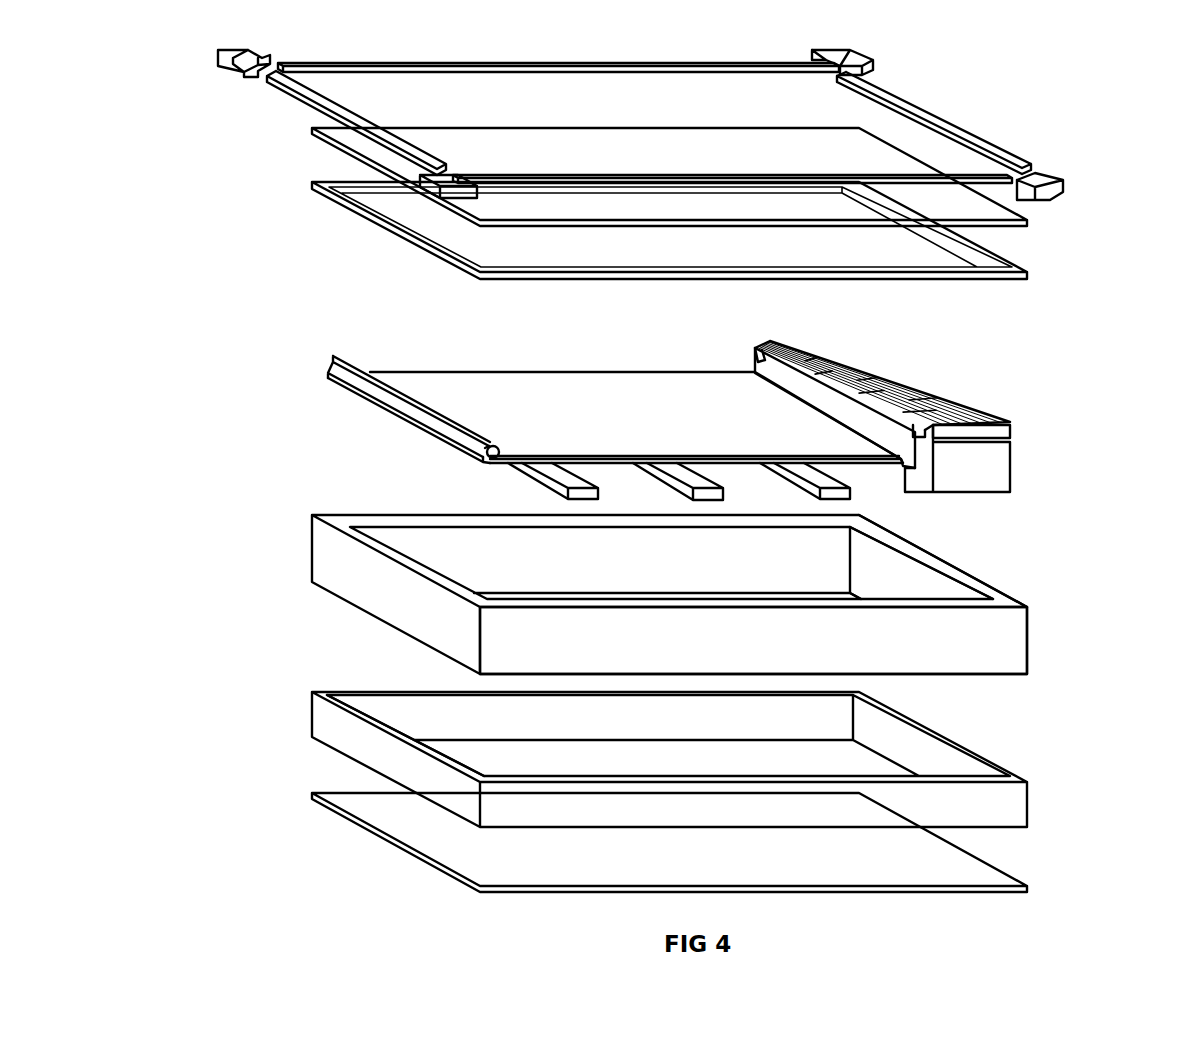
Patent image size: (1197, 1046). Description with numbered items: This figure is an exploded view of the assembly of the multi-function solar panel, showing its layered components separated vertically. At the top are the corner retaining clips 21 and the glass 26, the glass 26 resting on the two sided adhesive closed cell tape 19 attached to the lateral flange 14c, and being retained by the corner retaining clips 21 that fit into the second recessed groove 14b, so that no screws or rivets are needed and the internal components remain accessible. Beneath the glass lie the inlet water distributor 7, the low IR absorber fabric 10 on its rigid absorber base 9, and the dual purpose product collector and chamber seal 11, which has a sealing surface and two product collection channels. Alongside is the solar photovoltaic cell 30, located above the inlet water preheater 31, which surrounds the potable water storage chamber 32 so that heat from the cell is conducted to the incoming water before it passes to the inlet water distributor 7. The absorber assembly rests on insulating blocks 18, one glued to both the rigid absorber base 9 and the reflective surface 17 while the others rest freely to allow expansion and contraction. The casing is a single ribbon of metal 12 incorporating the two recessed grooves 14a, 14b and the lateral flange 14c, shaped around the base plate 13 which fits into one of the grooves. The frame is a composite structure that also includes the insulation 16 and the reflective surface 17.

The inlet water distributor 7 is at (326, 359).
The rigid absorber base 9 is at (391, 415).
The low IR absorber fabric 10 is at (446, 372).
The dual purpose product collector and chamber seal 11 is at (757, 356).
The ribbon of metal 12 is at (323, 562).
The base plate 13 is at (385, 863).
The recessed groove 14a is at (920, 541).
The recessed groove 14b is at (1018, 627).
The lateral flange 14c is at (868, 596).
The insulation 16 is at (323, 739).
The reflective surface 17 is at (410, 711).
The insulating blocks 18 is at (543, 480).
The two sided adhesive closed cell tape 19 is at (365, 223).
The corner retaining clips 21 is at (882, 64).
The glass 26 is at (1030, 229).
The solar photovoltaic cell 30 is at (930, 364).
The inlet water preheater 31 is at (1020, 463).
The potable water storage chamber 32 is at (1006, 475).